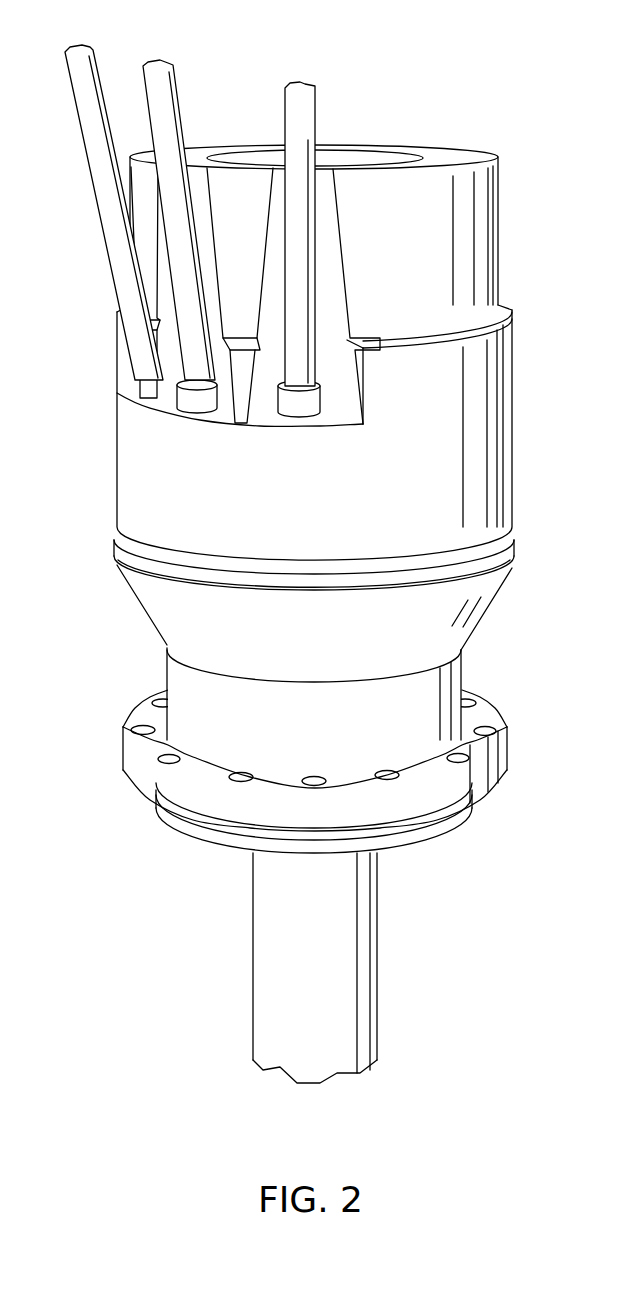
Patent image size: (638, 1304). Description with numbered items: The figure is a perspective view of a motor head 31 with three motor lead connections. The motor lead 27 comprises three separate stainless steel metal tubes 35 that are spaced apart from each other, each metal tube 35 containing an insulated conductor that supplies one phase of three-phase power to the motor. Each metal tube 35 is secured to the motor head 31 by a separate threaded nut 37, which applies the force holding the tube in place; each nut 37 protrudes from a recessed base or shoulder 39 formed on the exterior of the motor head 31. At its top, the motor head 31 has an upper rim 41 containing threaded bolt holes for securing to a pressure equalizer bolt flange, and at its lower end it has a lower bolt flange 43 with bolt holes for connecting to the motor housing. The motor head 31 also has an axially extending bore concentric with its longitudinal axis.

The motor lead 27 is at (181, 64).
The motor head 31 is at (153, 586).
The metal tube 35 is at (298, 108).
The threaded nut 37 is at (193, 400).
The recessed base or shoulder 39 is at (278, 410).
The upper rim 41 is at (400, 143).
The lower bolt flange 43 is at (150, 783).